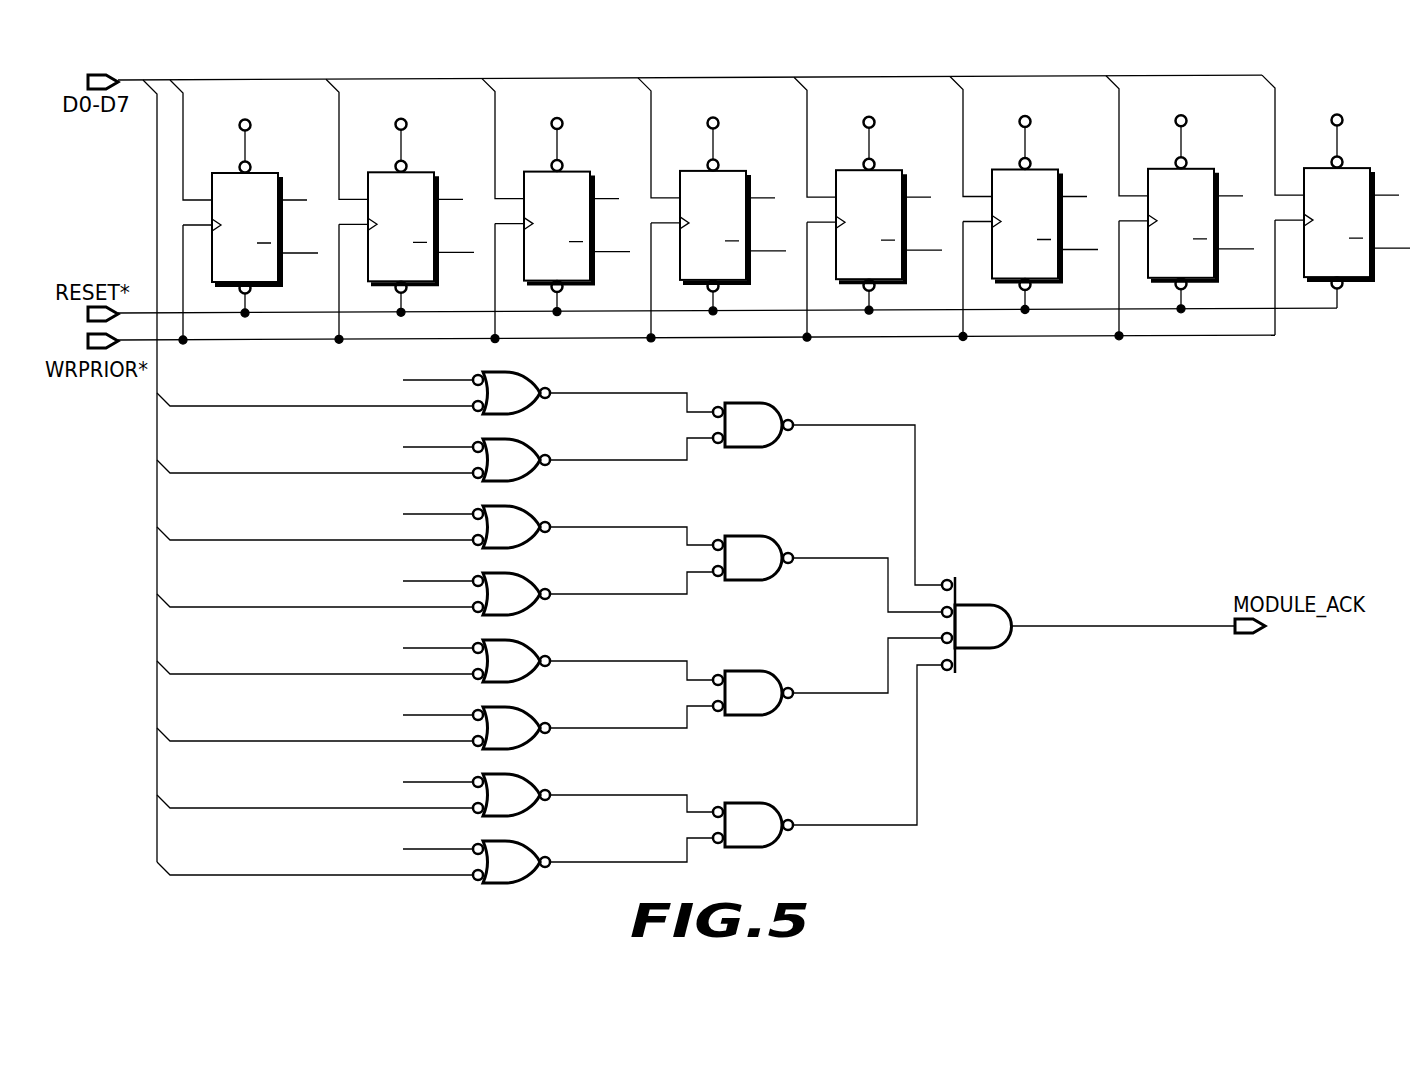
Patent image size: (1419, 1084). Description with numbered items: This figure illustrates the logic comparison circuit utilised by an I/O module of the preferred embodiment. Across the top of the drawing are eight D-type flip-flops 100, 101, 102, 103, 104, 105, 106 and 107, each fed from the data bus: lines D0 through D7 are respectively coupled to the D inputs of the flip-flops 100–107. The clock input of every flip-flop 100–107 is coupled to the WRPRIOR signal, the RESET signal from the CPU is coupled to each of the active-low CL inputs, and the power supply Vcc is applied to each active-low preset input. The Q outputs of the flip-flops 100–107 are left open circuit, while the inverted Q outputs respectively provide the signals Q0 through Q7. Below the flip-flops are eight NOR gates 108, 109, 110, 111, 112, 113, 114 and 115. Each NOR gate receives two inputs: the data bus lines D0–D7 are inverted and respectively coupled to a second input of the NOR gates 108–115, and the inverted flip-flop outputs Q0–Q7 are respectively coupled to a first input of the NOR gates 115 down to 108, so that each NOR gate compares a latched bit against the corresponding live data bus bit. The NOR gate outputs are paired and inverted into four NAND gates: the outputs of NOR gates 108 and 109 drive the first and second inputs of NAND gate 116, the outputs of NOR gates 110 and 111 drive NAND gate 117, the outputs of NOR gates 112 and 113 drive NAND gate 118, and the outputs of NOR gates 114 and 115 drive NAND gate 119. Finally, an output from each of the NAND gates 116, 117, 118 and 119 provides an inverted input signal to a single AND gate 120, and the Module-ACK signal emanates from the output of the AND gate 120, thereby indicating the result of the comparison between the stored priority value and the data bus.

The D-type flip-flop 100 is at (262, 172).
The D-type flip-flop 101 is at (402, 211).
The D-type flip-flop 102 is at (558, 211).
The D-type flip-flop 103 is at (714, 210).
The D-type flip-flop 104 is at (870, 209).
The D-type flip-flop 105 is at (1026, 209).
The D-type flip-flop 106 is at (1182, 208).
The D-type flip-flop 107 is at (1338, 205).
The NOR gate 108 is at (528, 404).
The NOR gate 109 is at (461, 453).
The NOR gate 110 is at (461, 520).
The NOR gate 111 is at (461, 587).
The NOR gate 112 is at (461, 654).
The NOR gate 113 is at (461, 721).
The NOR gate 114 is at (461, 788).
The NOR gate 115 is at (461, 855).
The NAND gate 116 is at (769, 437).
The NAND gate 117 is at (753, 558).
The NAND gate 118 is at (753, 693).
The NAND gate 119 is at (753, 825).
The AND gate 120 is at (997, 639).